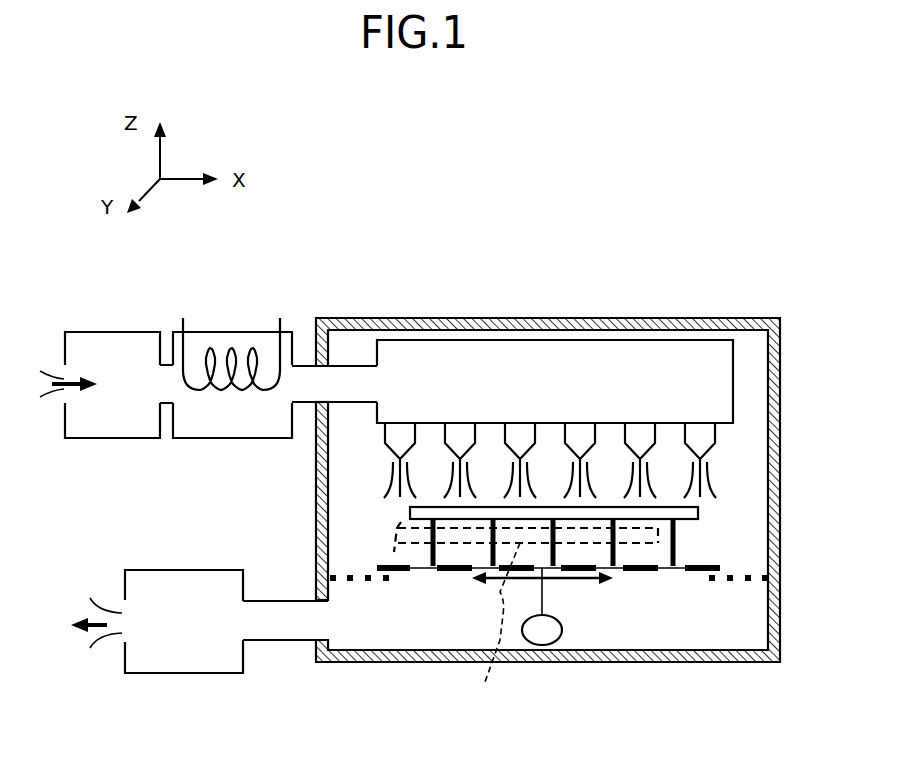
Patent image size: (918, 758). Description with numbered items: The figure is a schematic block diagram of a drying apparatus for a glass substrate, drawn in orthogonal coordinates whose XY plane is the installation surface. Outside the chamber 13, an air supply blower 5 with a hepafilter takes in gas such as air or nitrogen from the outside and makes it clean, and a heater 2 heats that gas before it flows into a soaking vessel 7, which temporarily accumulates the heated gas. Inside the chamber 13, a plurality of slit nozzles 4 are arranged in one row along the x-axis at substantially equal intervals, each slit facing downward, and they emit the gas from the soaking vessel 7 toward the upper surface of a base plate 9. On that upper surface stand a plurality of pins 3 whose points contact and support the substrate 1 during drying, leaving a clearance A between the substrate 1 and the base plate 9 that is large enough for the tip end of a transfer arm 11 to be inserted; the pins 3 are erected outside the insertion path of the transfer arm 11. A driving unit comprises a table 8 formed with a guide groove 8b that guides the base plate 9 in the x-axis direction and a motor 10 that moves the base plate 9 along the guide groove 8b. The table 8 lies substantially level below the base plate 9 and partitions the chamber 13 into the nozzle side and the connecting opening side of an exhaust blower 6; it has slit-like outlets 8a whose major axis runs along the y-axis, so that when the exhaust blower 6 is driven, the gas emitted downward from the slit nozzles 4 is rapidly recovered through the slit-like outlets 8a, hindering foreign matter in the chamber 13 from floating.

The substrate 1 is at (698, 516).
The heater 2 is at (190, 338).
The pins 3 is at (660, 541).
The slit nozzles 4 is at (708, 444).
The air supply blower 5 is at (117, 348).
The exhaust blower 6 is at (187, 578).
The soaking vessel 7 is at (375, 350).
The table 8 is at (747, 582).
The slit-like outlets 8a is at (353, 582).
The guide groove 8b is at (402, 580).
The base plate 9 is at (692, 572).
The motor 10 is at (545, 645).
The transfer arm 11 is at (495, 627).
The chamber 13 is at (652, 318).
The clearance A is at (463, 555).